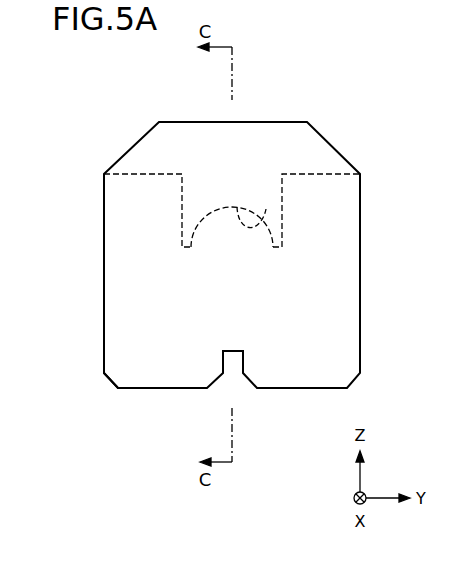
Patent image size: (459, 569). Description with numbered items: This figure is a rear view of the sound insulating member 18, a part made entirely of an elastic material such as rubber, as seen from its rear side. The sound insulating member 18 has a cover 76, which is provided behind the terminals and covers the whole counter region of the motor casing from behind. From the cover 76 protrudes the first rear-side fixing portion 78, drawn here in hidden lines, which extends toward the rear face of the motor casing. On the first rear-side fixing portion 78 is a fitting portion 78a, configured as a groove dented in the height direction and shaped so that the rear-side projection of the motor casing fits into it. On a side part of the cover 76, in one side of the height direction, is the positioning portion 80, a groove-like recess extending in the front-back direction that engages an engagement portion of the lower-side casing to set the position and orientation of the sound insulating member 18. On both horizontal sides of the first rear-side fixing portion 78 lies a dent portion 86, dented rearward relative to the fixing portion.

The sound insulating member 18 is at (133, 403).
The cover 76 is at (337, 295).
The first rear-side fixing portion 78 is at (253, 185).
The fitting portion 78a is at (258, 214).
The positioning portion 80 is at (234, 353).
The dent portion 86 is at (135, 220).